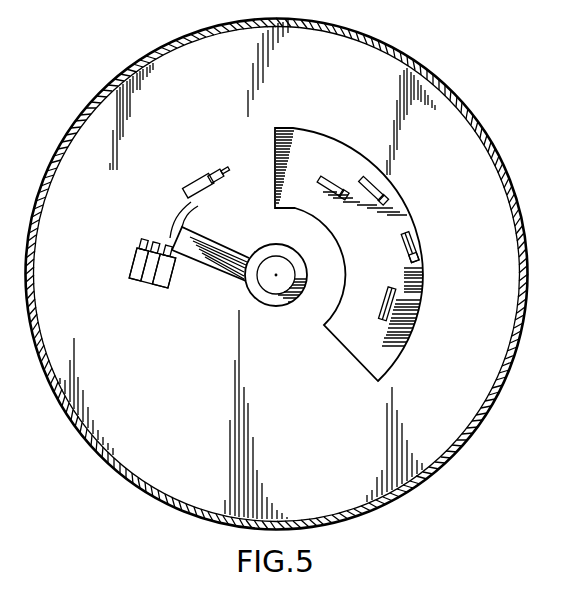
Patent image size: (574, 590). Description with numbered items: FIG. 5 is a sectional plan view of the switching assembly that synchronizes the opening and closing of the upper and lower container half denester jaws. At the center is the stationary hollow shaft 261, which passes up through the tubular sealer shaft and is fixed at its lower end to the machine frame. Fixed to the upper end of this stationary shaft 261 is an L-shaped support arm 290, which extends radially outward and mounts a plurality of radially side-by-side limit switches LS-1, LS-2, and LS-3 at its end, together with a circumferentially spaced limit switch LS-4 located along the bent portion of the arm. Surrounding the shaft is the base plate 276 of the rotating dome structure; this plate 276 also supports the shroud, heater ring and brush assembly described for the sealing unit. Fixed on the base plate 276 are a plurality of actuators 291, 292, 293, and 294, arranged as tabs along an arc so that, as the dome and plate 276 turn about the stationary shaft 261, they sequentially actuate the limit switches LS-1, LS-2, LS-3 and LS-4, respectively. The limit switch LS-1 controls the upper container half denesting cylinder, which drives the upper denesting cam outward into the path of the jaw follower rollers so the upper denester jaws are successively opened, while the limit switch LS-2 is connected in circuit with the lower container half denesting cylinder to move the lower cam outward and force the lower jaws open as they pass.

The hollow shaft 261 is at (272, 296).
The base plate 276 is at (313, 422).
The L-shaped support arm 290 is at (187, 246).
The actuator 291 is at (398, 308).
The actuator 292 is at (421, 250).
The actuator 293 is at (377, 187).
The actuator 294 is at (333, 180).
The limit switch LS-1 is at (156, 270).
The limit switch LS-2 is at (135, 259).
The limit switch LS-3 is at (131, 282).
The limit switch LS-4 is at (204, 200).